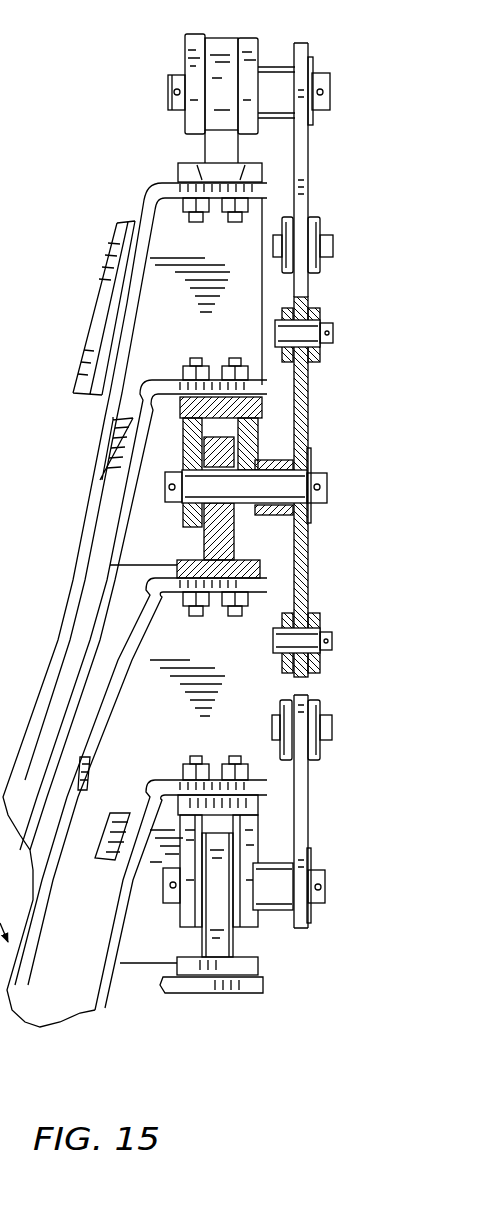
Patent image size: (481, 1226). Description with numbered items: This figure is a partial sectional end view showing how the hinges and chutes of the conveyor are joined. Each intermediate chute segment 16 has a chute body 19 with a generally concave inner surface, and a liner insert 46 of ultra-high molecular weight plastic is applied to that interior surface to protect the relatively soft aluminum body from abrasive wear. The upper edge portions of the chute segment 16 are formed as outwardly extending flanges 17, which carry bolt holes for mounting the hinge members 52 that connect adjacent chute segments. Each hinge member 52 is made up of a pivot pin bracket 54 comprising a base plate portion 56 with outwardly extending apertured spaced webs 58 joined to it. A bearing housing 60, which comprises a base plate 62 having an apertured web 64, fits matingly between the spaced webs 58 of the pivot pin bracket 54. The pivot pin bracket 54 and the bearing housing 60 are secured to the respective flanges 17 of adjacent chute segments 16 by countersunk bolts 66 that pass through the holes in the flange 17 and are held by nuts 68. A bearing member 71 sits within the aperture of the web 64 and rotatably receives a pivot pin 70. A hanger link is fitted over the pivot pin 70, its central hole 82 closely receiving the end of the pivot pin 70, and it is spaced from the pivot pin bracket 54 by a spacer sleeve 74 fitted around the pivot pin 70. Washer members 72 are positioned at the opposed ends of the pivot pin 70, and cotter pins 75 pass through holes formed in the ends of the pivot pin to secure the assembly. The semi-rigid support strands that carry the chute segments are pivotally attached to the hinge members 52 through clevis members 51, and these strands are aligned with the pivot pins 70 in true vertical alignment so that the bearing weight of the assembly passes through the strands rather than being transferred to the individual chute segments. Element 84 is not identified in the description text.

The intermediate chute segment 16 is at (89, 322).
The outwardly extending flange 17 is at (174, 192).
The chute body 19 is at (133, 300).
The liner insert 46 is at (117, 243).
The clevis member 51 is at (315, 218).
The hinge member 52 is at (153, 523).
The pivot pin bracket 54 is at (265, 432).
The base plate portion 56 is at (258, 403).
The spaced web 58 is at (183, 422).
The bearing housing 60 is at (188, 542).
The base plate 62 is at (262, 566).
The apertured web 64 is at (205, 450).
The countersunk bolt 66 is at (198, 168).
The nut 68 is at (210, 214).
The pivot pin 70 is at (327, 91).
The bearing member 71 is at (267, 517).
The washer member 72 is at (186, 58).
The spacer sleeve 74 is at (277, 68).
The cotter pin 75 is at (170, 91).
The central hole 82 is at (331, 484).
The roller pin 84 is at (333, 243).